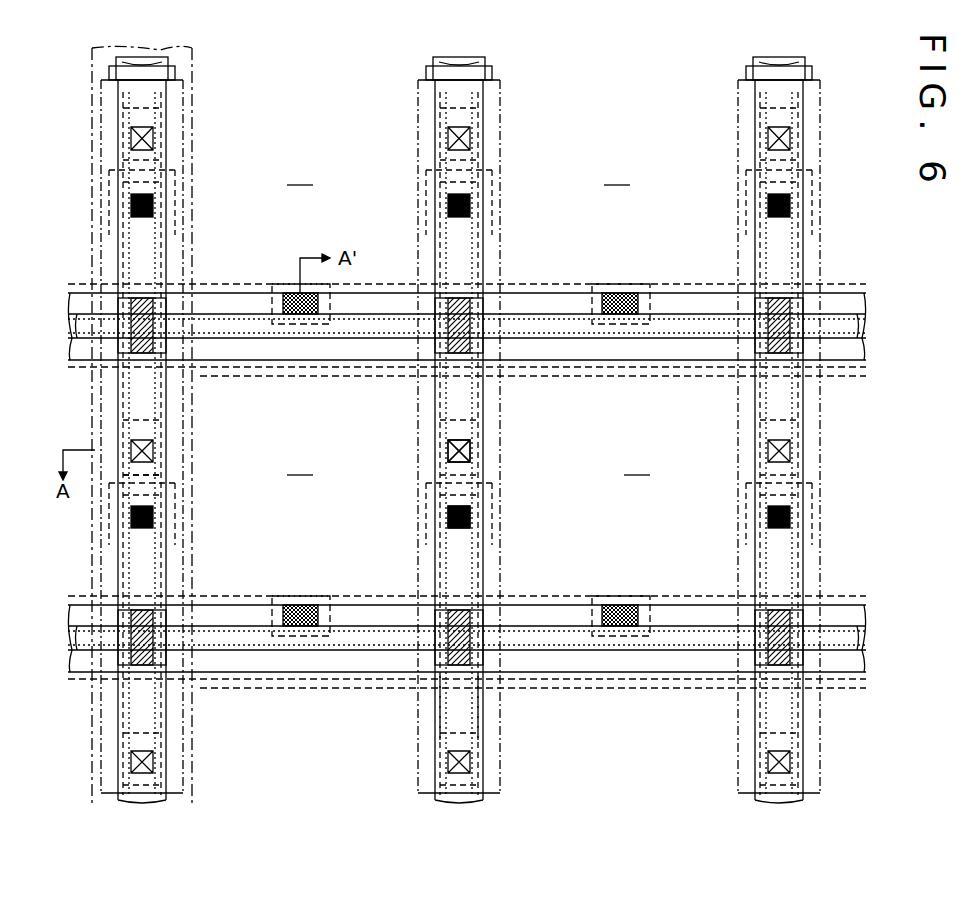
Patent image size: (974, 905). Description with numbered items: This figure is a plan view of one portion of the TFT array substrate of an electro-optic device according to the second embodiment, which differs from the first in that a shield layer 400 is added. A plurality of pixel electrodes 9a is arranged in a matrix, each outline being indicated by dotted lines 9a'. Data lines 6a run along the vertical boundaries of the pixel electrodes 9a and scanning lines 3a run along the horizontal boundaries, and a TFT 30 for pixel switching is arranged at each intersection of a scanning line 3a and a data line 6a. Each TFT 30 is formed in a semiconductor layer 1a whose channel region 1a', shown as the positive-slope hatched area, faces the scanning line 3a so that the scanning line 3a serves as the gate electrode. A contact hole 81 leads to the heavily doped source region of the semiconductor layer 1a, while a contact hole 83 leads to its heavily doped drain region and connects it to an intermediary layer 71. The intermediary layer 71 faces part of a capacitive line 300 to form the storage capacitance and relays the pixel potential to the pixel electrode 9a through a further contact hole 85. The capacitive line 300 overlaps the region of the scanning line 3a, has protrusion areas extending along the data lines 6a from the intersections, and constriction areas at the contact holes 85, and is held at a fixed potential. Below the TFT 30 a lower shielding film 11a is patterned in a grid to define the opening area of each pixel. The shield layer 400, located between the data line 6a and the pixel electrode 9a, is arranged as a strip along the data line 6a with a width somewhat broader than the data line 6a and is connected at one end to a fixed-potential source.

The shield layer 400 is at (196, 103).
The data line 6a is at (188, 430).
The pixel electrode 9a is at (468, 319).
The outline of pixel electrode 9a' is at (189, 475).
The contact hole 81 is at (470, 450).
The contact hole 83 is at (470, 516).
The intermediary layer 71 is at (300, 598).
The capacitive line 300 is at (366, 598).
The scanning line 3a is at (551, 627).
The contact hole 85 is at (618, 600).
The channel region 1a' is at (406, 666).
The semiconductor layer 1a is at (498, 708).
The lower shielding film 11a is at (645, 674).
The TFT 30 is at (396, 743).